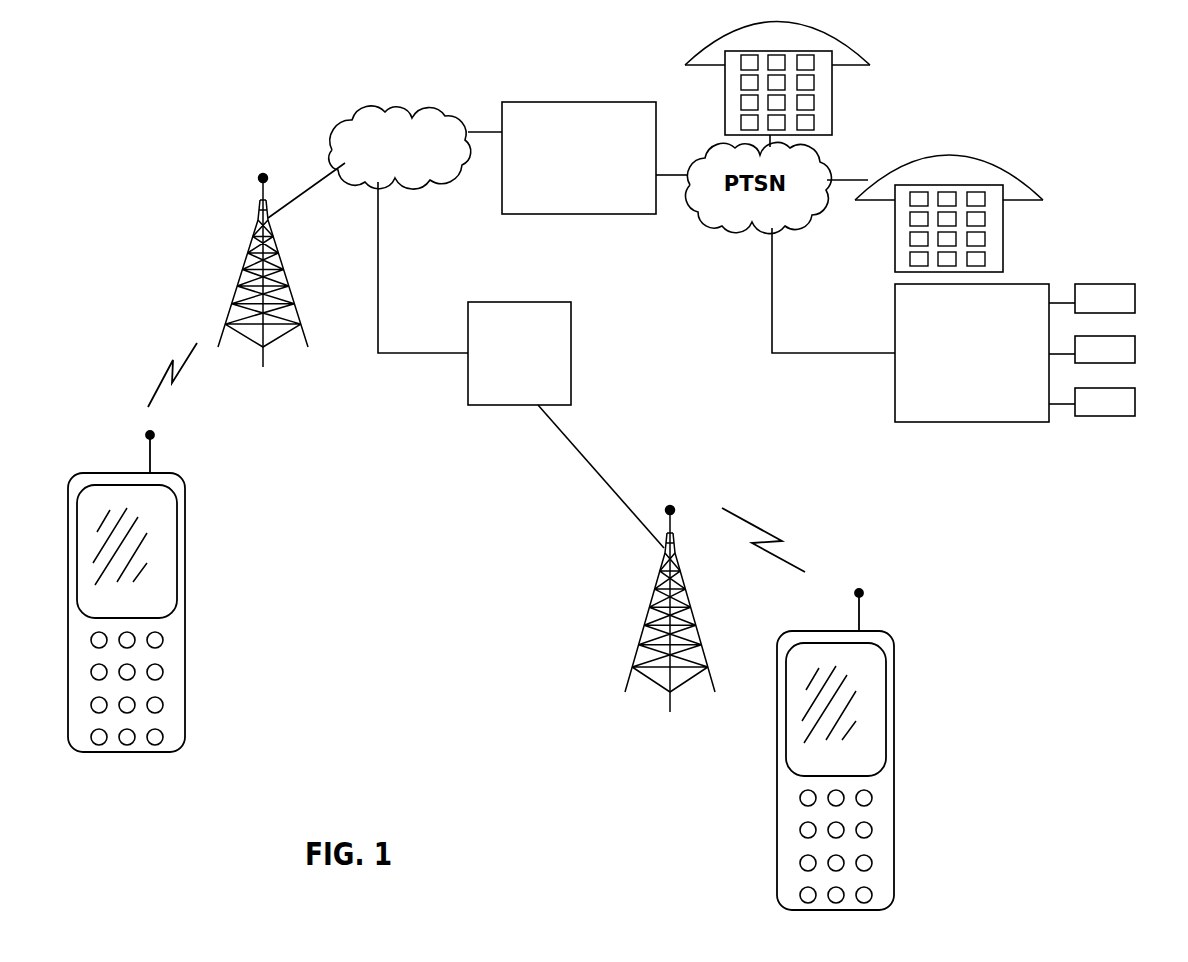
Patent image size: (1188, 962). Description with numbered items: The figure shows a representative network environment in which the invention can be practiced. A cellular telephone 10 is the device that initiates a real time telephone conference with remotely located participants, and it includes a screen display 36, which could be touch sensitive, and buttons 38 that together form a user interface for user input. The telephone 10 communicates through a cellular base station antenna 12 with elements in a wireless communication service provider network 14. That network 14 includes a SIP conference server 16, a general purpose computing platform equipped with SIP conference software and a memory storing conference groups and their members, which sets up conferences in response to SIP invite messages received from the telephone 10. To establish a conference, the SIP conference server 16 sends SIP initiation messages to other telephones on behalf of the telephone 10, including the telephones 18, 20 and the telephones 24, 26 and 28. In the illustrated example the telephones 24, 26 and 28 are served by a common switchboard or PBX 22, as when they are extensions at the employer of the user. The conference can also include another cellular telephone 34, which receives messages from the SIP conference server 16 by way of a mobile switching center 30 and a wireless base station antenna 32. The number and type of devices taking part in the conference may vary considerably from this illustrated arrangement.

The telephone 10 is at (159, 591).
The cellular base station antenna 12 is at (263, 363).
The wireless communication service provider network 14 is at (452, 112).
The SIP conference server 16 is at (632, 102).
The telephone 18 is at (868, 64).
The telephone 20 is at (1001, 165).
The PBX 22 is at (895, 390).
The telephone 24 is at (1128, 284).
The telephone 26 is at (1128, 336).
The telephone 28 is at (1128, 388).
The mobile switching center 30 is at (518, 405).
The wireless base station antenna 32 is at (668, 698).
The telephone 34 is at (893, 808).
The screen display 36 is at (162, 553).
The buttons 38 is at (175, 737).